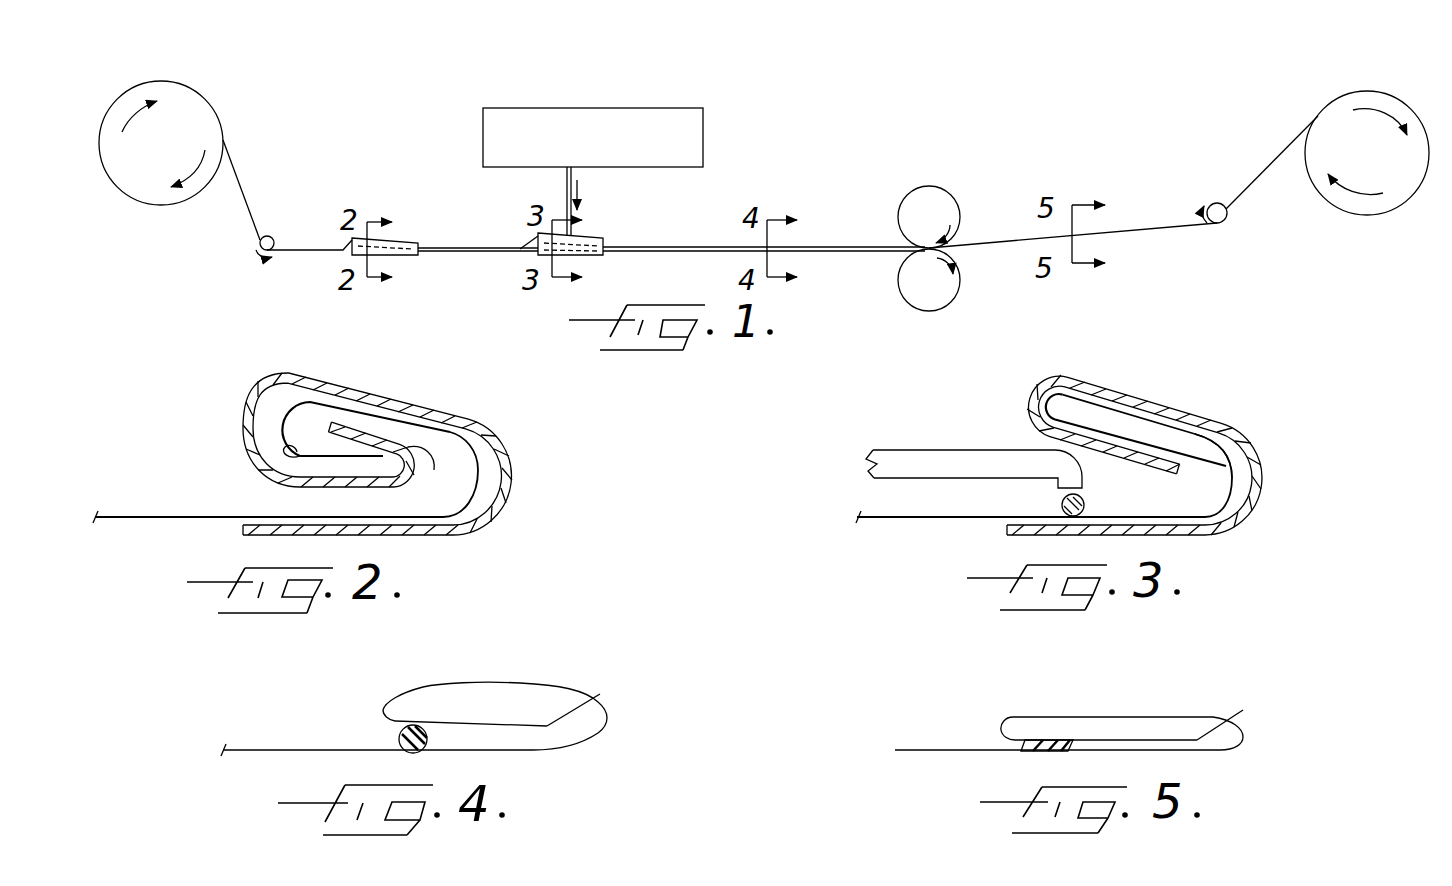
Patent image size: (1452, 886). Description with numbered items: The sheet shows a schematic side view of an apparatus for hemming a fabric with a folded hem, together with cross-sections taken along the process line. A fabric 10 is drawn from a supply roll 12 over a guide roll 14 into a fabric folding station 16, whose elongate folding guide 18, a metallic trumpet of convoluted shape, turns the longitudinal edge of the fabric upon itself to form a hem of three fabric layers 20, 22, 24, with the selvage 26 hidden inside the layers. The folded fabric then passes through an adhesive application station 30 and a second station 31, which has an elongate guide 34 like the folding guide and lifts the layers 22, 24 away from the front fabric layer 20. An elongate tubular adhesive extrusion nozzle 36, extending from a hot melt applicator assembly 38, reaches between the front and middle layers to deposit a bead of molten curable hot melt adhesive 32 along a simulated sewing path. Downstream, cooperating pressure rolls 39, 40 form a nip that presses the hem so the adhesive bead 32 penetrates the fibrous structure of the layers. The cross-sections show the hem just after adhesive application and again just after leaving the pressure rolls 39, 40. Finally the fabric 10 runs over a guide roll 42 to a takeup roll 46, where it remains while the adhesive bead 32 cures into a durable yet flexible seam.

In FIG. 1, the fabric 10 is at (237, 156).
In FIG. 1, the supply roll 12 is at (145, 188).
In FIG. 1, the guide roll 14 is at (272, 237).
In FIG. 1, the fabric folding station 16 is at (411, 232).
In FIG. 2, the fabric folding station 16 is at (346, 437).
In FIG. 2, the folding guide 18 is at (447, 416).
In FIG. 2, the front fabric layer 20 is at (273, 517).
In FIG. 2, the fabric layer 22 is at (350, 413).
In FIG. 3, the fabric layer 22 is at (1098, 400).
In FIG. 4, the fabric layer 22 is at (477, 684).
In FIG. 5, the fabric layer 22 is at (1046, 718).
In FIG. 2, the middle fabric layer 24 is at (303, 452).
In FIG. 3, the middle fabric layer 24 is at (1122, 430).
In FIG. 4, the middle fabric layer 24 is at (518, 726).
In FIG. 5, the middle fabric layer 24 is at (1152, 740).
In FIG. 2, the selvage 26 is at (430, 475).
In FIG. 3, the selvage 26 is at (1223, 450).
In FIG. 4, the selvage 26 is at (600, 694).
In FIG. 5, the selvage 26 is at (1253, 708).
In FIG. 1, the adhesive application station 30 is at (586, 130).
In FIG. 1, the second station 31 is at (609, 227).
In FIG. 3, the second station 31 is at (1085, 424).
In FIG. 3, the adhesive bead 32 is at (1062, 502).
In FIG. 4, the adhesive bead 32 is at (398, 742).
In FIG. 5, the adhesive bead 32 is at (1020, 744).
In FIG. 3, the elongate guide 34 is at (1244, 431).
In FIG. 3, the adhesive extrusion nozzle 36 is at (903, 462).
In FIG. 1, the hot melt applicator assembly 38 is at (644, 110).
In FIG. 1, the pressure roll 39 is at (943, 196).
In FIG. 1, the pressure roll 40 is at (936, 293).
In FIG. 1, the guide roll 42 is at (1219, 204).
In FIG. 1, the takeup roll 46 is at (1348, 108).